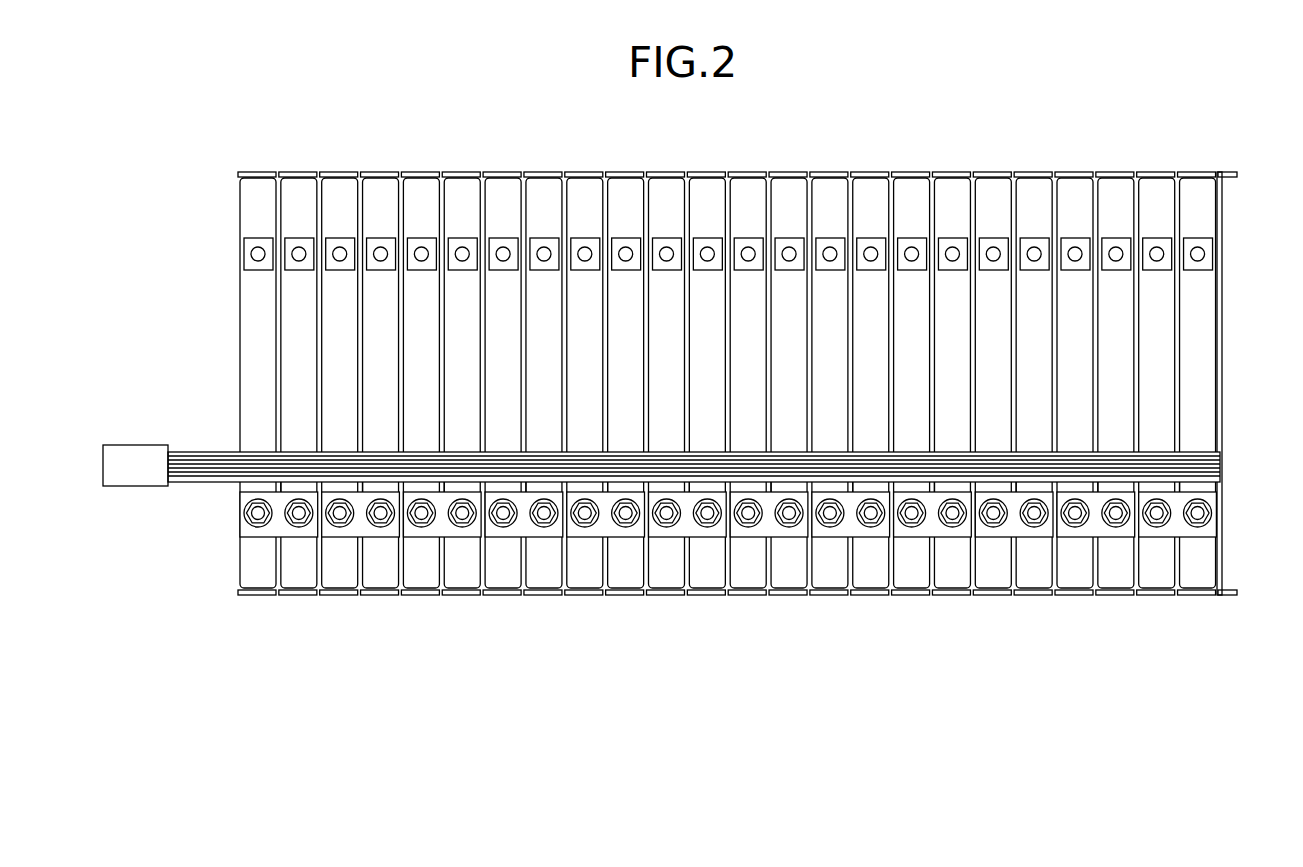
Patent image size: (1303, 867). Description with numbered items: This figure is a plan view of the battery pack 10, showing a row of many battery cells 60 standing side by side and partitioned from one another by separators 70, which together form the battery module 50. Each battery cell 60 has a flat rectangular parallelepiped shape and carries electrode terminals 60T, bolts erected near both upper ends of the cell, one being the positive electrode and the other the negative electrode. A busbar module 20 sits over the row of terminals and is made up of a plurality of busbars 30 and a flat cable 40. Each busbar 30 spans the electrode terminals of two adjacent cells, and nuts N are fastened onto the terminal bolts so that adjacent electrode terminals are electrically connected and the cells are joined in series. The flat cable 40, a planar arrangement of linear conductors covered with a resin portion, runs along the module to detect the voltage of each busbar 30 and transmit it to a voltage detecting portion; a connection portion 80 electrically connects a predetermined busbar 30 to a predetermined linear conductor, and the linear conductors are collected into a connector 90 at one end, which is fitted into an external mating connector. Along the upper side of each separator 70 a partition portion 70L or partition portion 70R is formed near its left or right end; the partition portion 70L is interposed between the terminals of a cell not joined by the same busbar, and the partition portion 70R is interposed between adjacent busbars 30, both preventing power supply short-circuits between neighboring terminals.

The battery pack 10 is at (672, 414).
The busbar module 20 is at (693, 532).
The busbar 30 is at (1212, 528).
The flat cable 40 is at (257, 479).
The battery module 50 is at (696, 387).
The battery cell 60 is at (714, 413).
The electrode terminal 60T is at (1197, 256).
The separator 70 is at (719, 387).
The partition portion 70L is at (1087, 197).
The partition portion 70R is at (1053, 530).
The connection portion 80 is at (520, 488).
The connector 90 is at (133, 488).
The nut N is at (1220, 500).